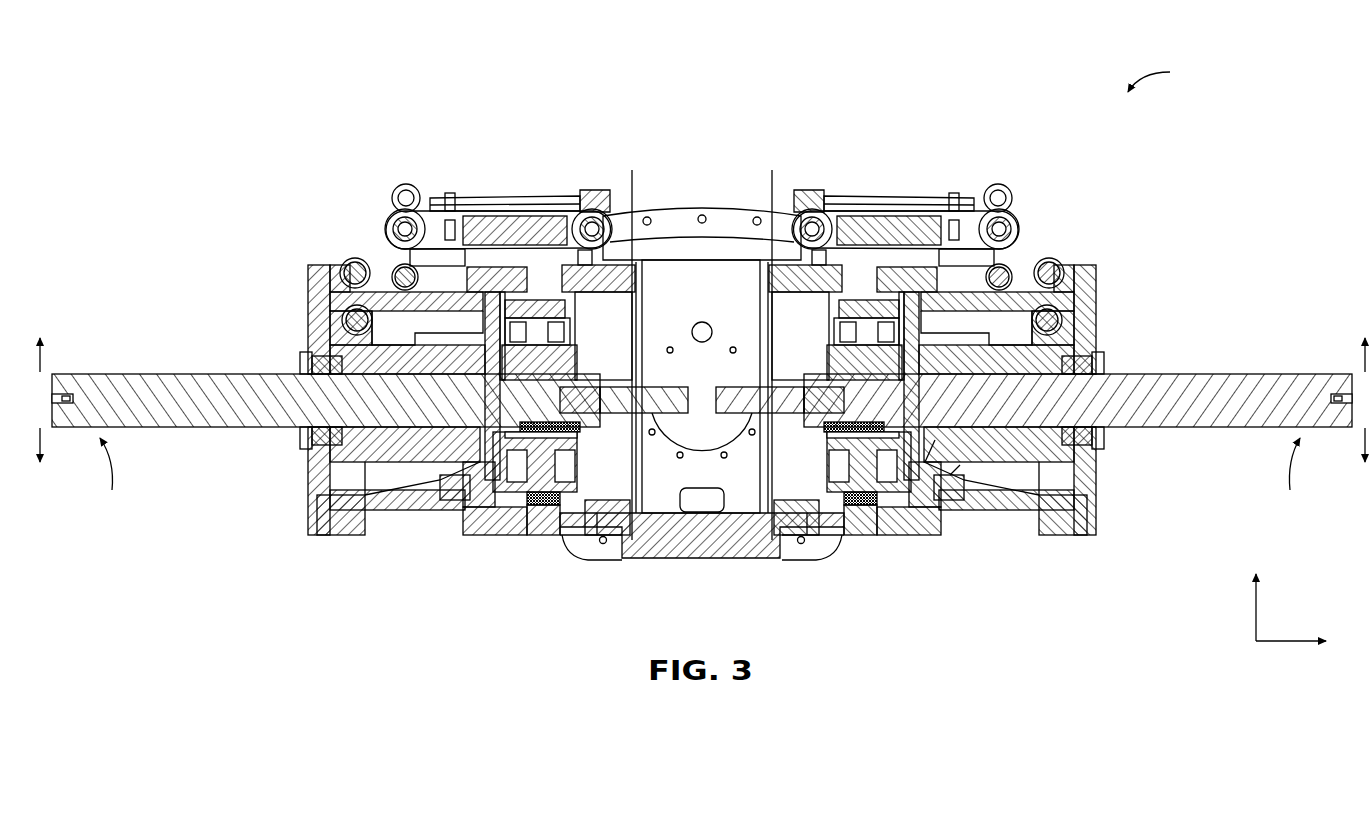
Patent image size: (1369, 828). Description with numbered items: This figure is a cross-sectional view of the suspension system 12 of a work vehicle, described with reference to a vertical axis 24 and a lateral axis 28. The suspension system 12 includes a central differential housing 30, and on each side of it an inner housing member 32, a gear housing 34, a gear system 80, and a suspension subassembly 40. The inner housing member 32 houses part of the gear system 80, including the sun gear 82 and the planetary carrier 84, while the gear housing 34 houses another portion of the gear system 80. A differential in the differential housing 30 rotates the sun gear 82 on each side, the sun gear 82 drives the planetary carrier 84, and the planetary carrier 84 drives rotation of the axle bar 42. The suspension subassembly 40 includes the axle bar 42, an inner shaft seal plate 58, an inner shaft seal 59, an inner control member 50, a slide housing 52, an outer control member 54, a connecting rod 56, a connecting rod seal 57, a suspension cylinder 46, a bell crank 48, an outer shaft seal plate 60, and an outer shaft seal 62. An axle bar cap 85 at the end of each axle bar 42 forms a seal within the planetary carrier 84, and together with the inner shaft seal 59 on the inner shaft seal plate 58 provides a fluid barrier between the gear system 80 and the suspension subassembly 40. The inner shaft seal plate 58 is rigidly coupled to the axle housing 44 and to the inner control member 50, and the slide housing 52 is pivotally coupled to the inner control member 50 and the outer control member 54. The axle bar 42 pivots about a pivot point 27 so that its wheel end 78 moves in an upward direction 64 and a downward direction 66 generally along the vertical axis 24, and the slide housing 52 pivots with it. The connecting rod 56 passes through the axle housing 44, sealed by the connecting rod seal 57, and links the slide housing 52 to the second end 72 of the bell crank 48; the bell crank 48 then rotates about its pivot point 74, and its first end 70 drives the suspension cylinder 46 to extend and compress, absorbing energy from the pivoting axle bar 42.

The suspension system 12 is at (1167, 74).
The vertical axis 24 is at (1254, 614).
The pivot point 27 is at (952, 250).
The lateral axis 28 is at (1286, 640).
The differential housing 30 is at (692, 206).
The inner housing member 32 is at (565, 520).
The gear housing 34 is at (537, 537).
The suspension subassembly 40 is at (278, 190).
The axle bar 42 is at (120, 374).
The axle housing 44 is at (495, 533).
The suspension cylinder 46 is at (488, 196).
The bell crank 48 is at (398, 186).
The inner control member 50 is at (450, 480).
The slide housing 52 is at (400, 508).
The outer control member 54 is at (340, 520).
The connecting rod 56 is at (332, 305).
The connecting rod seal 57 is at (312, 282).
The inner shaft seal plate 58 is at (925, 462).
The inner shaft seal 59 is at (955, 470).
The outer shaft seal plate 60 is at (332, 325).
The outer shaft seal 62 is at (340, 355).
The upward direction 64 is at (42, 362).
The downward direction 66 is at (42, 440).
The first end 70 is at (418, 208).
The second end 72 is at (350, 259).
The pivot point 74 is at (393, 270).
The wheel end 78 is at (704, 478).
The gear system 80 is at (704, 341).
The sun gear 82 is at (600, 330).
The planetary carrier 84 is at (497, 378).
The axle bar cap 85 is at (557, 350).